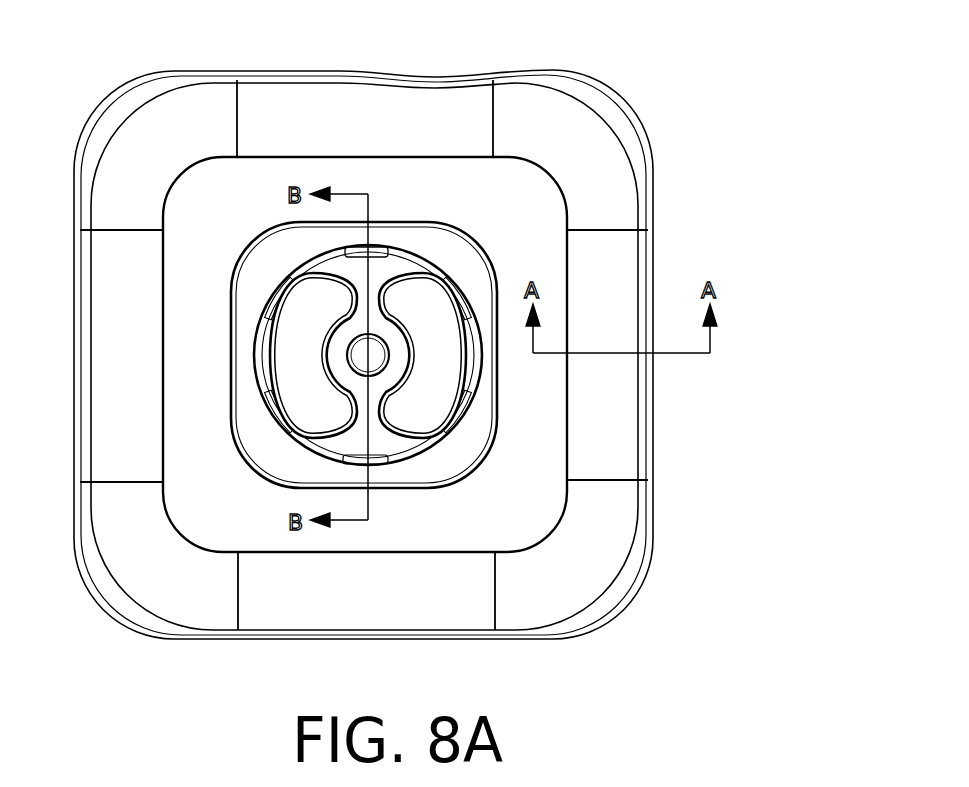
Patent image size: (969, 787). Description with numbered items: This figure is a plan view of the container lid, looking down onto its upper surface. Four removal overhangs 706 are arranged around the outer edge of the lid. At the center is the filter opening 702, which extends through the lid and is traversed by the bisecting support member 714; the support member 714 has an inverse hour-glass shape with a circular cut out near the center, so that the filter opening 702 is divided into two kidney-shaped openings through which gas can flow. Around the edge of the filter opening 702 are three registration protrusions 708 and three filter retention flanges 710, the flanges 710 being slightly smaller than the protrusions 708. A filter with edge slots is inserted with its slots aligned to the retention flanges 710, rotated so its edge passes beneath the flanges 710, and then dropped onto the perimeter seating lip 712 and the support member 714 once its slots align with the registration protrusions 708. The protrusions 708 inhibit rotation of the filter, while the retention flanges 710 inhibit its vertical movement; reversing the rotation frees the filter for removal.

The filter opening 702 is at (437, 355).
The removal overhangs 706 is at (643, 122).
The registration protrusions 708 is at (457, 290).
The filter retention flanges 710 is at (375, 240).
The perimeter seating lip 712 is at (468, 370).
The bisecting support member 714 is at (373, 400).